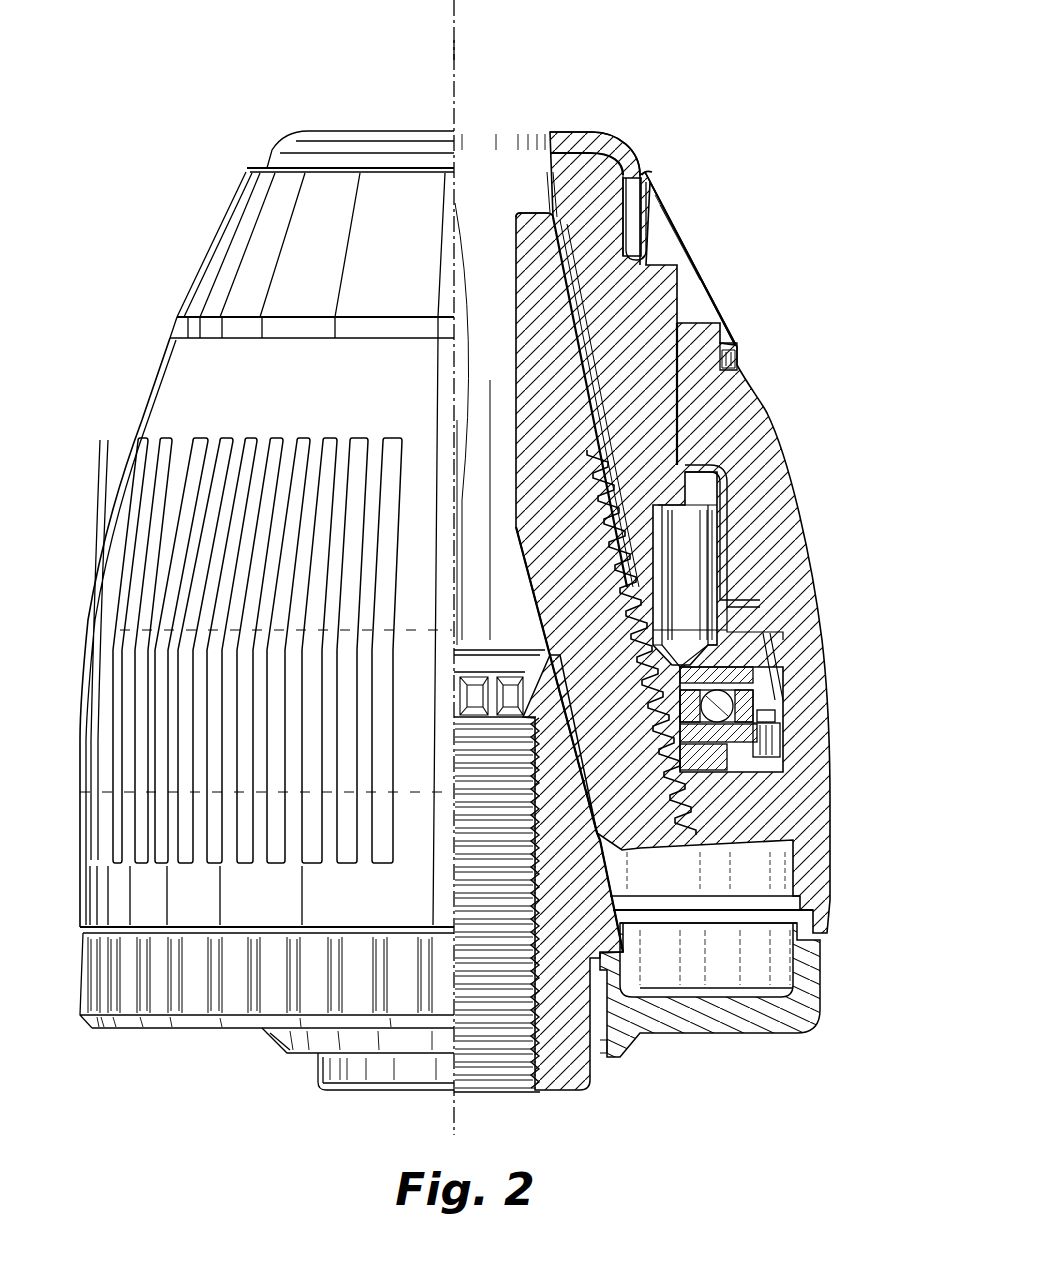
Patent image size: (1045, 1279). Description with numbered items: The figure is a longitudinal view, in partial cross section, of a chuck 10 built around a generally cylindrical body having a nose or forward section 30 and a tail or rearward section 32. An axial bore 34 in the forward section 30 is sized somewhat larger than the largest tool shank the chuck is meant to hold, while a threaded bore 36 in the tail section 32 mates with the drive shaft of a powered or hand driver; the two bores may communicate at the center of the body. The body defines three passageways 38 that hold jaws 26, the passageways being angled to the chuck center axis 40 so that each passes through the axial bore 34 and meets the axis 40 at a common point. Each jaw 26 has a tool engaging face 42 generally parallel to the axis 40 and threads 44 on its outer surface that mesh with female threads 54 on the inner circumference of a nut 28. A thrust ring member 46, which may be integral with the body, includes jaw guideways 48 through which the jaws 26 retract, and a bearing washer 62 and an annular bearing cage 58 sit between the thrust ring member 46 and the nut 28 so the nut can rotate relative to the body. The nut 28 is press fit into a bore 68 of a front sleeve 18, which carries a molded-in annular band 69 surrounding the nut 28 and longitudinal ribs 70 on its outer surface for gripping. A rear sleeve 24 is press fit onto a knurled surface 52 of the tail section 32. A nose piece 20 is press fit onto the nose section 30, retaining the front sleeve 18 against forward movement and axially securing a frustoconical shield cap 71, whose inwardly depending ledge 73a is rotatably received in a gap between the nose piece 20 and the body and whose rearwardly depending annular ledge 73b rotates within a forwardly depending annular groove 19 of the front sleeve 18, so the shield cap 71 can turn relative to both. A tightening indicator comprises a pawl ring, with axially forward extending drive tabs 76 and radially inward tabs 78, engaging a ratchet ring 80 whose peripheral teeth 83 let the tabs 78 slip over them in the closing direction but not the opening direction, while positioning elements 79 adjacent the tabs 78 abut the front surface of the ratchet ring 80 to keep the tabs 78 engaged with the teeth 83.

The chuck 10 is at (144, 69).
The chuck center axis 40 is at (455, 52).
The axial bore 34 is at (512, 175).
The nose piece 20 is at (627, 150).
The forward section 30 is at (600, 190).
The passageways 38 is at (512, 230).
The tool engaging face 42 is at (553, 213).
The inwardly depending ledge 73a is at (645, 250).
The shield cap 71 is at (717, 280).
The rearwardly depending annular ledge 73b is at (743, 345).
The forwardly depending annular groove 19 is at (737, 366).
The front sleeve 18 is at (770, 417).
The threads 44 is at (717, 513).
The bore 68 is at (673, 540).
The annular band 69 is at (723, 567).
The female threads 54 is at (643, 627).
The drive tabs 76 is at (737, 657).
The nut 28 is at (740, 677).
The bearing washer 62 is at (760, 660).
The annular bearing cage 58 is at (753, 700).
The positioning elements 79 is at (767, 716).
The teeth 83 is at (762, 733).
The tabs 78 is at (770, 738).
The ratchet ring 80 is at (730, 735).
The thrust ring member 46 is at (720, 760).
The jaw guideways 48 is at (693, 770).
The jaws 26 is at (650, 860).
The threaded bore 36 is at (480, 1010).
The knurled surface 52 is at (575, 1060).
The tail section 32 is at (322, 1087).
The rear sleeve 24 is at (160, 1035).
The longitudinal ribs 70 is at (207, 487).